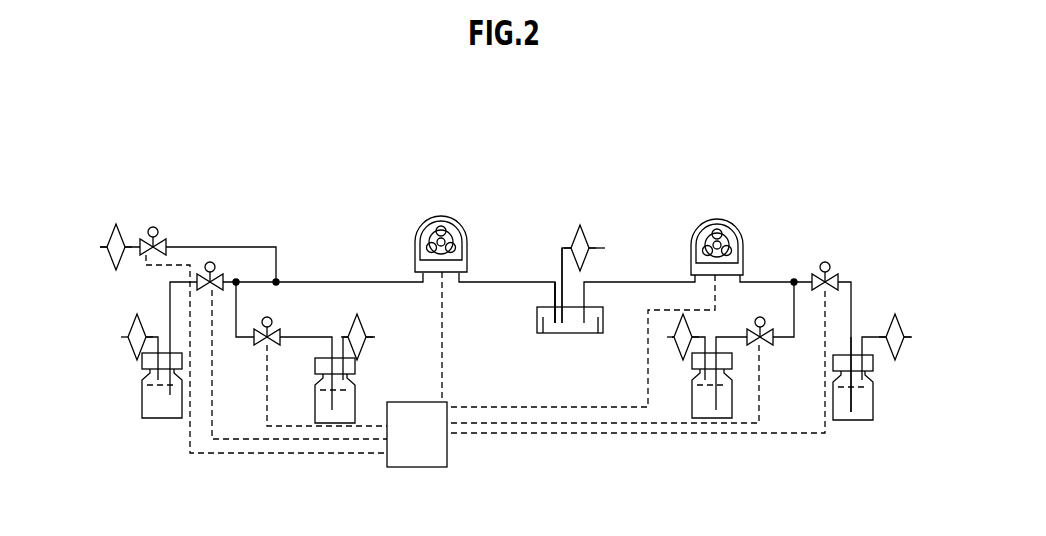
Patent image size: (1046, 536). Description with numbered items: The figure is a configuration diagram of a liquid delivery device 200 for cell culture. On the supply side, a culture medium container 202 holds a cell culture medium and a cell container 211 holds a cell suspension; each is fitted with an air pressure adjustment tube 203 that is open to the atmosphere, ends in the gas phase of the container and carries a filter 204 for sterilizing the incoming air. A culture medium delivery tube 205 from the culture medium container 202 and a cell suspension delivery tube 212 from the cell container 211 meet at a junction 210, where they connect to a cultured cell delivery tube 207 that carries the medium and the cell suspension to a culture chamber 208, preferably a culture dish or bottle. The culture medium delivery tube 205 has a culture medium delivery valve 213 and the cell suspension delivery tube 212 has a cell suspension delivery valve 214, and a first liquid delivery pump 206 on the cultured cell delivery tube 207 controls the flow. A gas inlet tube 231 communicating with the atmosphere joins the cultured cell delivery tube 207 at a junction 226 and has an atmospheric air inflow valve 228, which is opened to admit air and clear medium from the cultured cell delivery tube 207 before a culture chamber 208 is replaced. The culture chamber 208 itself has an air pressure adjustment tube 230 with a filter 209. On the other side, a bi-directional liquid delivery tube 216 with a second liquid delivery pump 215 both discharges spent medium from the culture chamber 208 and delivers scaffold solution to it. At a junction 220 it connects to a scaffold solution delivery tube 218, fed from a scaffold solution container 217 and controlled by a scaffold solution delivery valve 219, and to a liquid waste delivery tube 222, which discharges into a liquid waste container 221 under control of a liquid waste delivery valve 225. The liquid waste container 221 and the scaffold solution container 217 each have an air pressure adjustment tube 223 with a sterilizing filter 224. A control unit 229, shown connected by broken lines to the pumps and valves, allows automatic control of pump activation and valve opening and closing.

The liquid delivery device 200 is at (527, 117).
The culture medium container 202 is at (137, 421).
The air pressure adjustment tube 203 is at (110, 314).
The filter 204 is at (101, 323).
The culture medium delivery tube 205 is at (155, 421).
The first liquid delivery pump 206 is at (458, 286).
The cultured cell delivery tube 207 is at (307, 256).
The culture chamber 208 is at (590, 347).
The filter 209 is at (577, 221).
The junction 210 is at (268, 255).
The cell container 211 is at (316, 428).
The cell suspension delivery tube 212 is at (366, 411).
The culture medium delivery valve 213 is at (292, 306).
The cell suspension delivery valve 214 is at (302, 371).
The second liquid delivery pump 215 is at (602, 287).
The bi-directional liquid delivery tube 216 is at (639, 240).
The scaffold solution container 217 is at (693, 419).
The scaffold solution delivery tube 218 is at (715, 406).
The scaffold solution delivery valve 219 is at (625, 295).
The junction 220 is at (812, 252).
The liquid waste container 221 is at (889, 412).
The liquid waste delivery tube 222 is at (838, 426).
The air pressure adjustment tube 223 is at (900, 296).
The filter 224 is at (920, 309).
The liquid waste delivery valve 225 is at (671, 300).
The junction 226 is at (310, 229).
The atmospheric air inflow valve 228 is at (263, 312).
The control unit 229 is at (455, 457).
The air pressure adjustment tube 230 is at (537, 245).
The gas inlet tube 231 is at (221, 218).